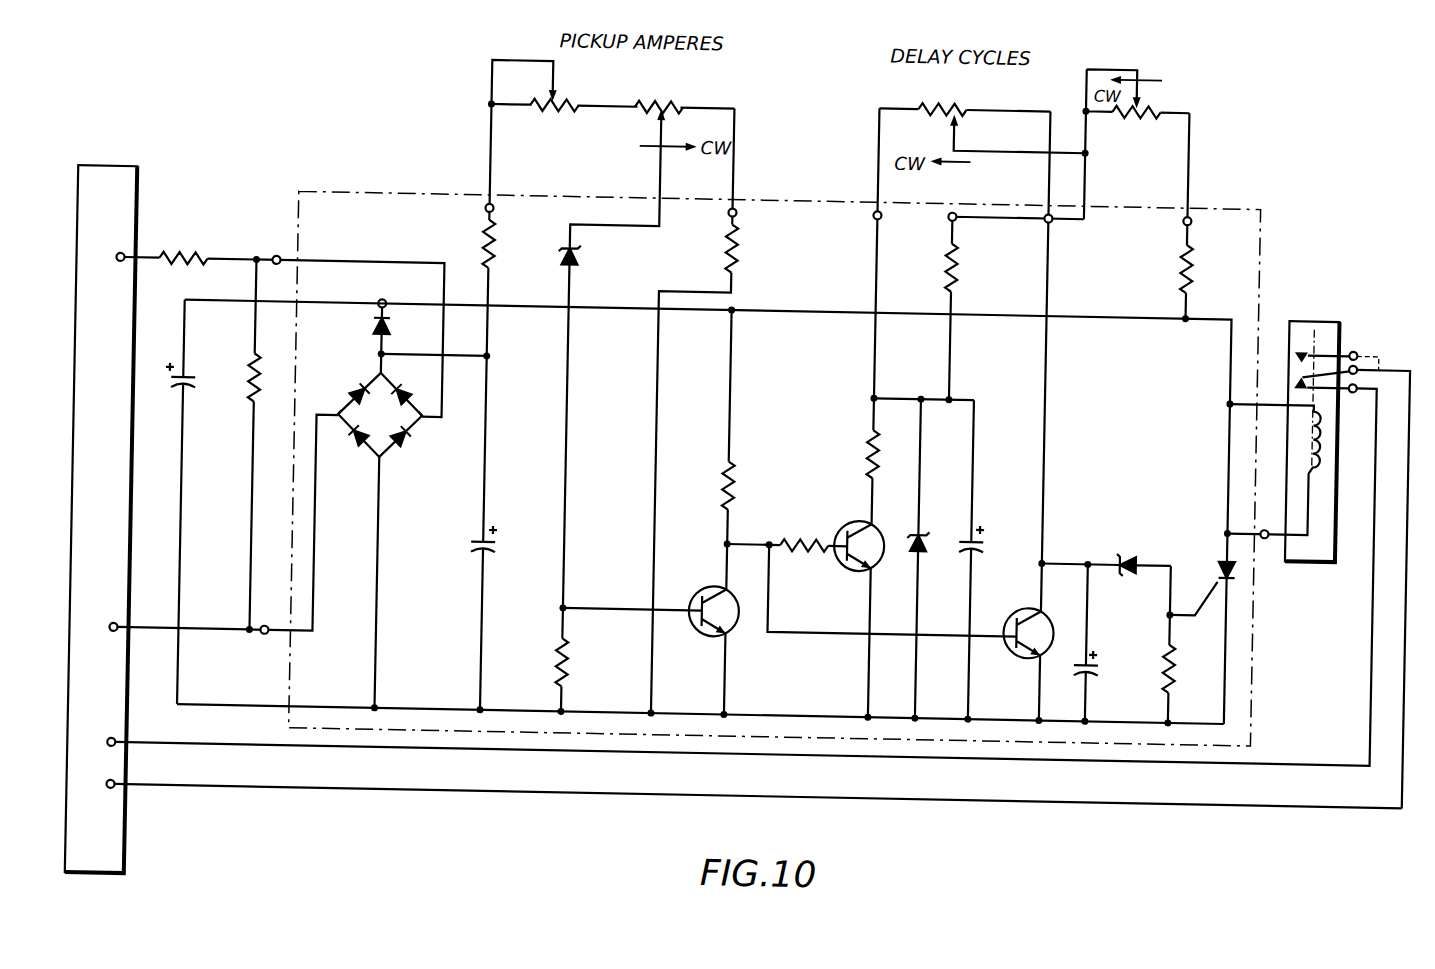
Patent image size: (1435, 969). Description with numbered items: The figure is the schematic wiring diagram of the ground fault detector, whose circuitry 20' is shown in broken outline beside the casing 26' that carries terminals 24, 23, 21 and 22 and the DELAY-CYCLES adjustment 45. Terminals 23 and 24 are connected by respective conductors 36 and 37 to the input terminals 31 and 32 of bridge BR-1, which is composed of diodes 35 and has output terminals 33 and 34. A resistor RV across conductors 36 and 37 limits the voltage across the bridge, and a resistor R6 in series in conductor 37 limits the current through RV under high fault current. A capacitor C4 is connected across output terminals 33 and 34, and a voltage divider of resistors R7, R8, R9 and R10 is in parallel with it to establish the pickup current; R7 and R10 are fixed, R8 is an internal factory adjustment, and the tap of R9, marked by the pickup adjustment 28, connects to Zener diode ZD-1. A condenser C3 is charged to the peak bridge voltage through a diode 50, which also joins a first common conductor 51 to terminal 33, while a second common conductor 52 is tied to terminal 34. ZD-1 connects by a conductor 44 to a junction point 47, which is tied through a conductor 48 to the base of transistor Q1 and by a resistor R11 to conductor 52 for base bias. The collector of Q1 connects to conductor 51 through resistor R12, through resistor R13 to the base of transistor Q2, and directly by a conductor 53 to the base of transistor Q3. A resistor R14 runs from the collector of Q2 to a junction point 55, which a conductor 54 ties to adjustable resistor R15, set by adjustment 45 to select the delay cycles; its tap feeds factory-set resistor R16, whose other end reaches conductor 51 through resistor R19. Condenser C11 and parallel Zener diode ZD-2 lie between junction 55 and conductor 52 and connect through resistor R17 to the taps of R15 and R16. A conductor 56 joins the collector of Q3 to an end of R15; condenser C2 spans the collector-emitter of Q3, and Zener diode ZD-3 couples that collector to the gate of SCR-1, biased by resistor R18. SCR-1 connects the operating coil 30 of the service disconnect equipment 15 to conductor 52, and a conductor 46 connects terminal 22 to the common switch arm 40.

The casing 26' is at (126, 510).
The control circuit module 20' is at (775, 445).
The terminal 24 is at (114, 264).
The terminal 23 is at (116, 634).
The output terminal 21 is at (116, 749).
The terminal 22 is at (114, 799).
The conductor 37 is at (366, 264).
The conductor 36 is at (316, 606).
The diode 50 is at (369, 333).
The output terminal 33 is at (350, 396).
The diodes 35 is at (406, 400).
The output terminal 34 is at (383, 464).
The input terminal 31 is at (343, 417).
The input terminal 32 is at (419, 435).
The first common conductor 51 is at (811, 305).
The second common conductor 52 is at (814, 720).
The conductor 53 is at (802, 631).
The conductor 54 is at (874, 269).
The junction point 55 is at (870, 395).
The conductor 56 is at (1045, 446).
The pickup adjustment wiper 28 is at (654, 153).
The conductor 44 is at (568, 492).
The DELAY-CYCLES adjustment 45 is at (945, 130).
The junction point 47 is at (563, 610).
The conductor 48 is at (614, 612).
The common switch arm 40 is at (1311, 365).
The operating coil 30 is at (1307, 435).
The service disconnect equipment 15 is at (1303, 547).
The conductor 46 is at (1404, 567).
The resistor R6 is at (204, 264).
The resistor RV is at (249, 398).
The condenser C3 is at (165, 501).
The bridge BR-1 is at (377, 532).
The resistor R7 is at (480, 244).
The resistor R8 is at (572, 110).
The resistor R9 is at (661, 106).
The resistor R10 is at (732, 250).
The Zener diode ZD-1 is at (576, 257).
The resistor R11 is at (560, 660).
The resistor R12 is at (734, 478).
The resistor R13 is at (834, 540).
The transistor Q1 is at (730, 636).
The transistor Q2 is at (881, 566).
The third transistor Q3 is at (1014, 608).
The resistor R14 is at (869, 452).
The adjustable resistor R15 is at (957, 95).
The adjustable resistor R16 is at (1141, 105).
The resistor R17 is at (954, 260).
The resistor R18 is at (1178, 664).
The resistor R19 is at (1188, 262).
The Zener diode ZD-2 is at (926, 534).
The Zener diode ZD-3 is at (1136, 537).
The condenser C11 is at (984, 540).
The condenser C2 is at (1111, 654).
The capacitor C4 is at (480, 544).
The silicon controlled rectifier SCR-1 is at (1216, 568).